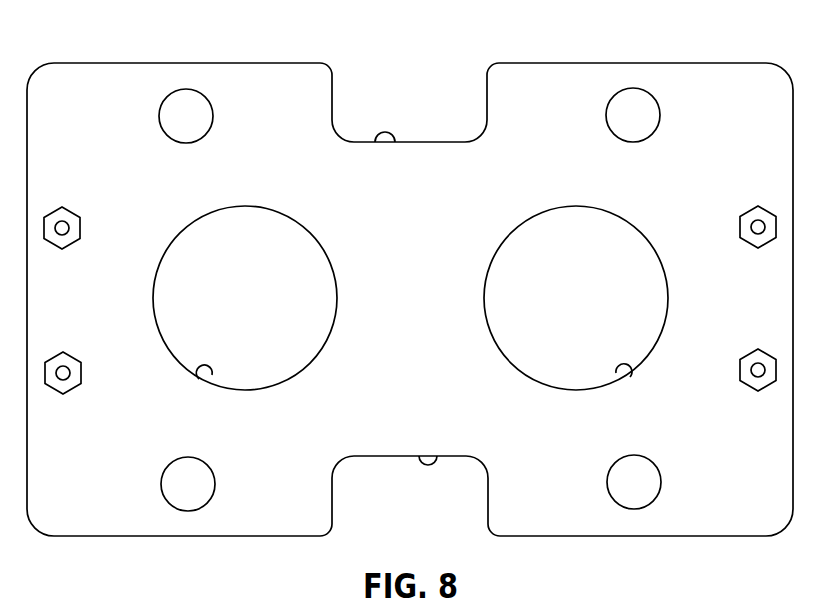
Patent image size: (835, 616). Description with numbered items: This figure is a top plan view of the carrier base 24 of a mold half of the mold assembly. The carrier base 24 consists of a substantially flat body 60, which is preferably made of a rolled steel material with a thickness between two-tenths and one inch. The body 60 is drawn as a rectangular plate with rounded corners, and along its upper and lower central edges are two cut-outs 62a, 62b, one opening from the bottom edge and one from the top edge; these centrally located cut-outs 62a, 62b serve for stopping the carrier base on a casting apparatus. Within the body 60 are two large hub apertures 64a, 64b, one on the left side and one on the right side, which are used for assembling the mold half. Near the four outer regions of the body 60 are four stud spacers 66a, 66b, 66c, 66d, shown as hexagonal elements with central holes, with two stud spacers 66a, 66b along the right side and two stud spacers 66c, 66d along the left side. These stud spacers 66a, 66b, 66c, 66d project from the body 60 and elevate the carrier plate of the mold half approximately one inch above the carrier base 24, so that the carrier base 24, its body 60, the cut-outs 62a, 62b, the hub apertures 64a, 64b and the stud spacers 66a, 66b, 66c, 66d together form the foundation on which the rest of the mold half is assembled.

The carrier base 24 is at (130, 63).
The body 60 is at (688, 68).
The cut-out 62a is at (437, 465).
The cut-out 62b is at (376, 142).
The hub aperture 64a is at (208, 380).
The hub aperture 64b is at (622, 373).
The stud spacer 66a is at (747, 215).
The stud spacer 66b is at (753, 353).
The stud spacer 66c is at (68, 212).
The stud spacer 66d is at (70, 358).